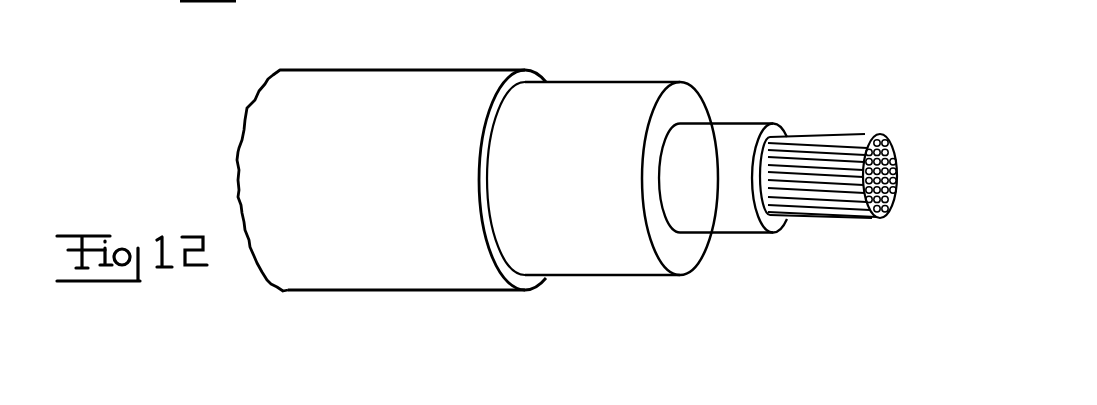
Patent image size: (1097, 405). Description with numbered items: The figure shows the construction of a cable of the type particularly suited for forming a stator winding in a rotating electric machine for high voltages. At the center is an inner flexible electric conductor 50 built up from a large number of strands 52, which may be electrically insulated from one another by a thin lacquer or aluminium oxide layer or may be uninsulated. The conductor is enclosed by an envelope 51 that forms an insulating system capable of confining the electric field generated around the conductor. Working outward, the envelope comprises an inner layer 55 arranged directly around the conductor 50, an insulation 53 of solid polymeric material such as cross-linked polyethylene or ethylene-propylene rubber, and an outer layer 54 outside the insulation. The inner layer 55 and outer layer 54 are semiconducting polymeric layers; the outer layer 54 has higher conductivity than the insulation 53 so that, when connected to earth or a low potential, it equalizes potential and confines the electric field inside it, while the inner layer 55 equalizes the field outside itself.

The inner electric conductor 50 is at (833, 132).
The envelope 51 is at (575, 81).
The strands 52 is at (890, 138).
The insulation 53 is at (597, 90).
The outer layer 54 is at (510, 80).
The inner layer 55 is at (743, 125).